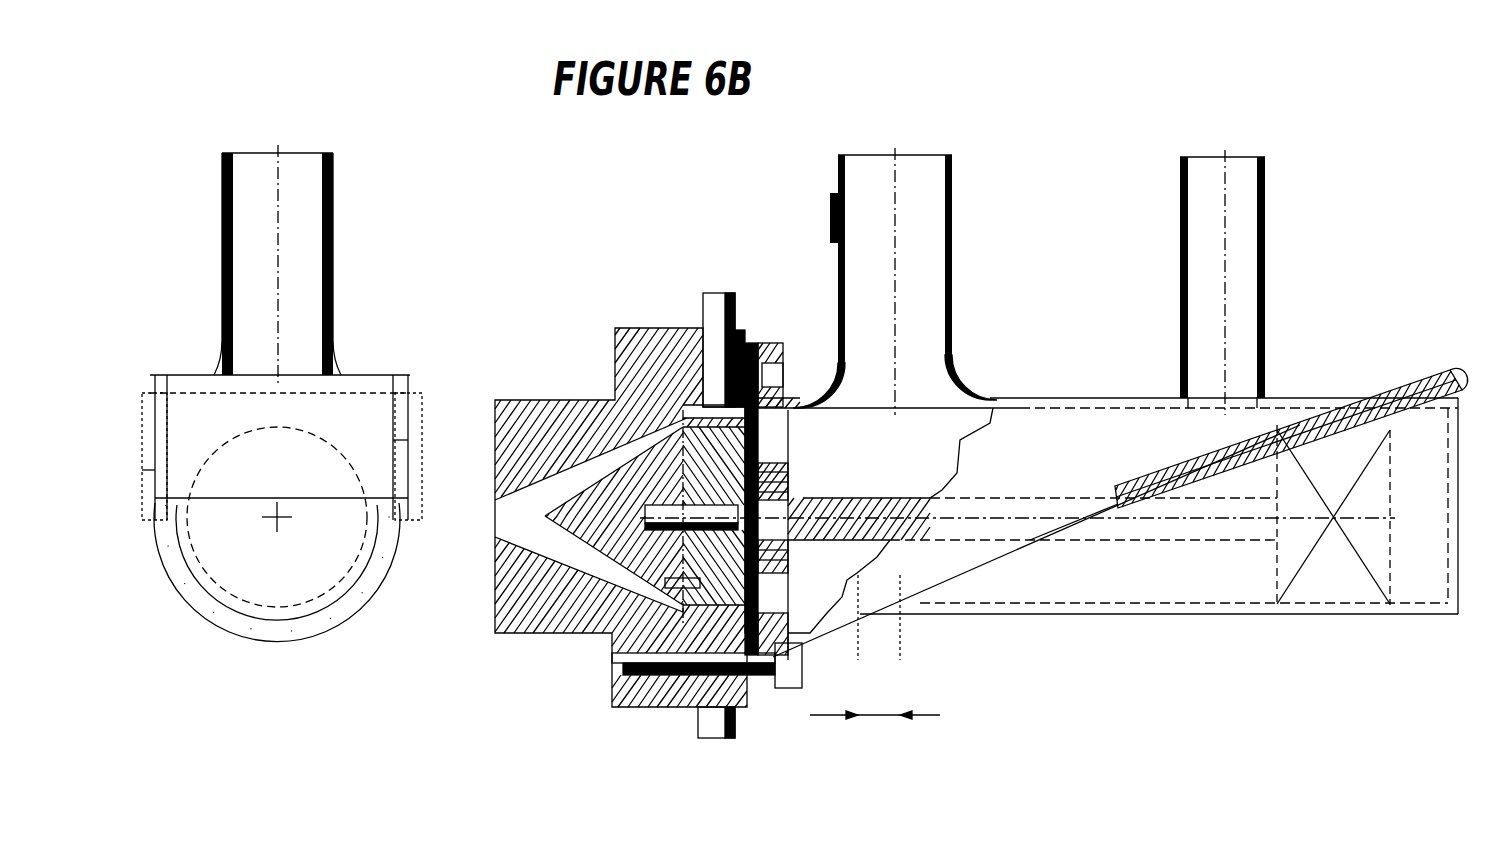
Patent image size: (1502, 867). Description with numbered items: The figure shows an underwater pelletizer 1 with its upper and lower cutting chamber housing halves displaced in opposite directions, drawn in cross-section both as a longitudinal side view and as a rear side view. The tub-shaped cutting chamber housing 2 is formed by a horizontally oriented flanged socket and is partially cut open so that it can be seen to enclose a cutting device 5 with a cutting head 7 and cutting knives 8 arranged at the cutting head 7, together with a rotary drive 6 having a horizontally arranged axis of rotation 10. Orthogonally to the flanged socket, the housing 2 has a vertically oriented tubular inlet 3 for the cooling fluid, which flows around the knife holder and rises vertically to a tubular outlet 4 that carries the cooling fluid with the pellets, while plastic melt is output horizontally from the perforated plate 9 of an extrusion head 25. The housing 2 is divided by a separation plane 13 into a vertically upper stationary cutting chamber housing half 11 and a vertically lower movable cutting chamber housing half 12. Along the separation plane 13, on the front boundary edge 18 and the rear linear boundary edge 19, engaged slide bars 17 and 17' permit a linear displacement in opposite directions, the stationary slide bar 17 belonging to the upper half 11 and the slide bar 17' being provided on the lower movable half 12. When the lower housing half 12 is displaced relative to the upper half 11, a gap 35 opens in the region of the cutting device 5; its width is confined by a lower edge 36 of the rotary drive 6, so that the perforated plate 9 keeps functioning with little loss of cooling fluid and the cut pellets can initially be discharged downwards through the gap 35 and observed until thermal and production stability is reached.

The underwater pelletizer 1 is at (1312, 148).
The cutting chamber housing 2 is at (1275, 396).
The inlet pipe 3 is at (318, 206).
The outlet pipe 4 is at (326, 330).
The cutting device 5 is at (796, 500).
The rotary drive 6 is at (262, 595).
The cutting head 7 is at (788, 560).
The cutting knives 8 is at (780, 432).
The perforated plate 9 is at (692, 335).
The axis of rotation 10 is at (970, 516).
The upper stationary cutting chamber housing half 11 is at (322, 628).
The lower movable cutting chamber housing half 12 is at (362, 568).
The separation plane 13 is at (1028, 532).
The slide bar 17 is at (786, 512).
The slide bar 17' is at (745, 419).
The front boundary edge 18 is at (153, 473).
The rear linear boundary edge 19 is at (404, 440).
The extrusion head 25 is at (531, 635).
The gap 35 is at (870, 720).
The lower edge 36 is at (1300, 616).